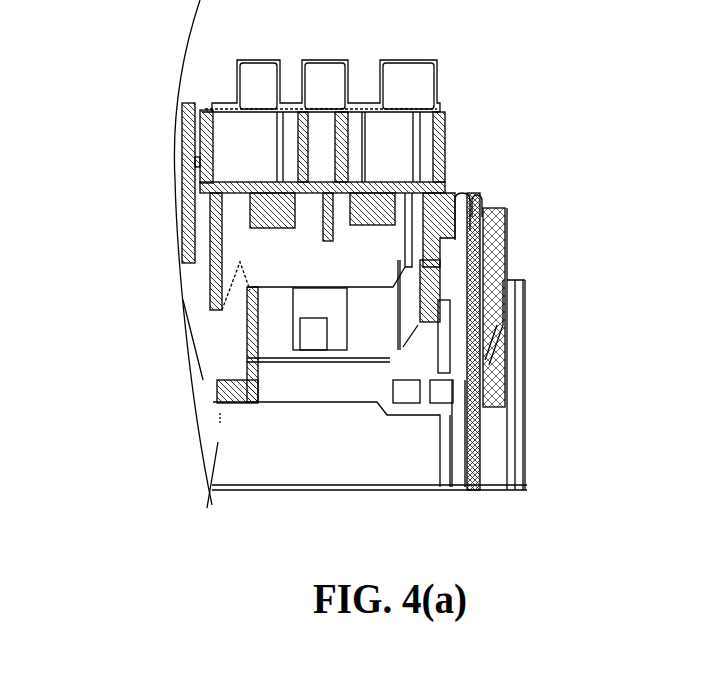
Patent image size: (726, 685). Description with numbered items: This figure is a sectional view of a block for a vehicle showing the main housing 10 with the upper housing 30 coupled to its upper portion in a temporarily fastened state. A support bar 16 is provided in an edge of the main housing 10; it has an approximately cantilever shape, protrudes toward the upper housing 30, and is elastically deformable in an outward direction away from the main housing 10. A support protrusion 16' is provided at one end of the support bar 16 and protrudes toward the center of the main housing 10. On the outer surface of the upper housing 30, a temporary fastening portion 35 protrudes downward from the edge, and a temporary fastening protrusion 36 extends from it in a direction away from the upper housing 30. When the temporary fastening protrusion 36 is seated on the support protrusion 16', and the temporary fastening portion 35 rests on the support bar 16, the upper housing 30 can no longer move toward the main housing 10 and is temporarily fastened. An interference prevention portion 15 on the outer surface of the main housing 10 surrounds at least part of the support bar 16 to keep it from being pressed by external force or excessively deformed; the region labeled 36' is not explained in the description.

The upper housing 30 is at (441, 88).
The temporary fastening portion 35 is at (452, 163).
The temporary fastening protrusion 36 is at (463, 241).
The support bar 16 is at (477, 198).
The latch plate 36' is at (538, 307).
The interference prevention portion 15 is at (501, 258).
The support protrusion 16' is at (532, 322).
The main housing 10 is at (524, 380).